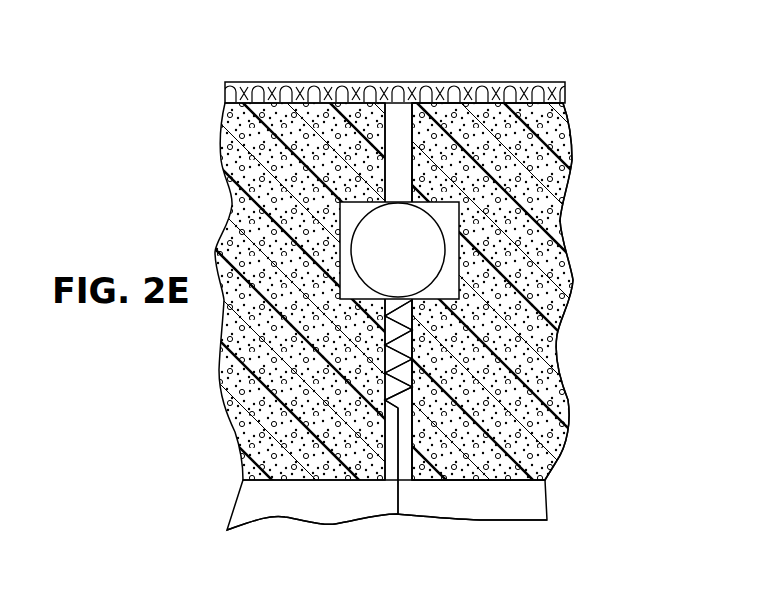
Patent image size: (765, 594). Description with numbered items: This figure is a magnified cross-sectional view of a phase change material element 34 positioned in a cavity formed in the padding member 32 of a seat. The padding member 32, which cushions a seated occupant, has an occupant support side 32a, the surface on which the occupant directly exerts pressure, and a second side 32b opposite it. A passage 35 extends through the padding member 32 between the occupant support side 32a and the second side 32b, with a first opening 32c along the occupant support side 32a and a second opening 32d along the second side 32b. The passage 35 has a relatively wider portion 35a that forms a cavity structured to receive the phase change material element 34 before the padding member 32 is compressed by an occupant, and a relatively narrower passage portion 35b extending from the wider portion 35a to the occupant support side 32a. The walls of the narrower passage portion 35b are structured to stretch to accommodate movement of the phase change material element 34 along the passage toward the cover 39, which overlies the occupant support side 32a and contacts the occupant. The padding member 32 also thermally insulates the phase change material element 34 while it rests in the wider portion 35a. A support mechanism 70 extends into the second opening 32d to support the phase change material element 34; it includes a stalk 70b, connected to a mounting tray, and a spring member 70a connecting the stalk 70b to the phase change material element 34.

The padding member 32 is at (281, 97).
The occupant support side 32a is at (443, 102).
The second side 32b is at (448, 481).
The first opening 32c is at (392, 84).
The second opening 32d is at (395, 481).
The phase change material element 34 is at (389, 259).
The passage 35 is at (413, 143).
The relatively wider portion 35a is at (340, 212).
The relatively narrower passage portion 35b is at (385, 164).
The cover 39 is at (517, 83).
The support mechanism 70 is at (392, 503).
The spring member 70a is at (412, 388).
The stalk 70b is at (400, 497).